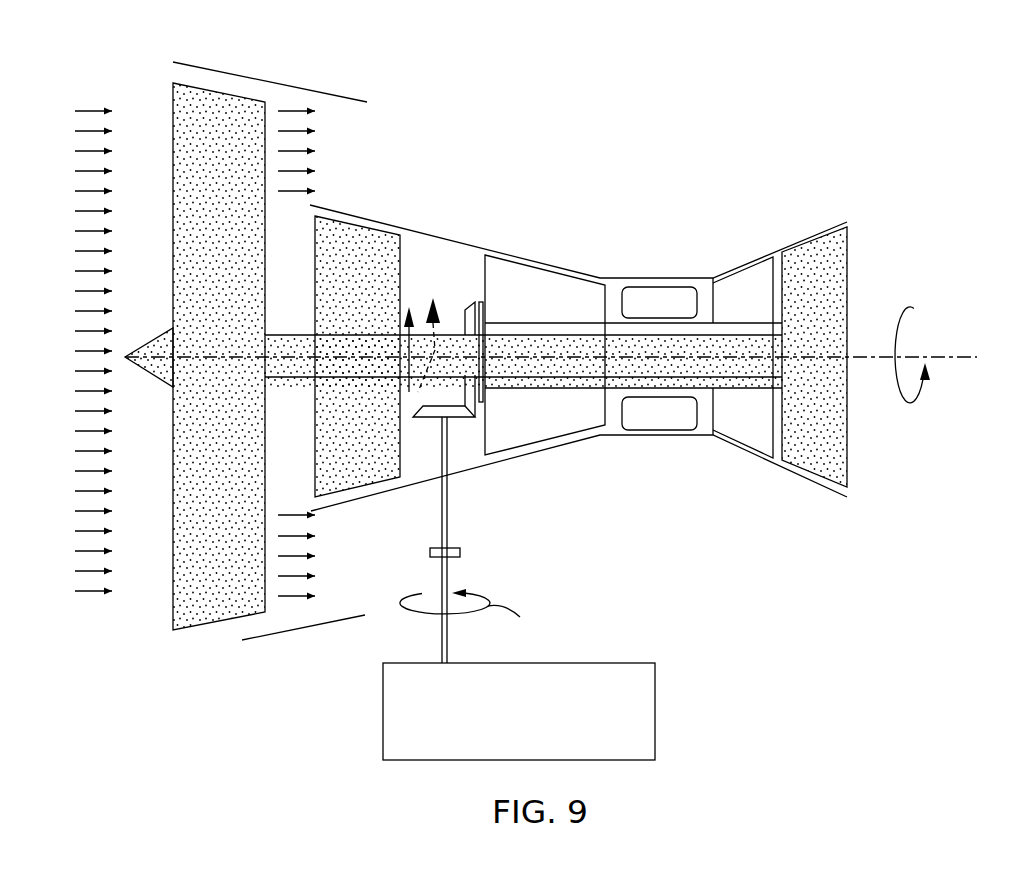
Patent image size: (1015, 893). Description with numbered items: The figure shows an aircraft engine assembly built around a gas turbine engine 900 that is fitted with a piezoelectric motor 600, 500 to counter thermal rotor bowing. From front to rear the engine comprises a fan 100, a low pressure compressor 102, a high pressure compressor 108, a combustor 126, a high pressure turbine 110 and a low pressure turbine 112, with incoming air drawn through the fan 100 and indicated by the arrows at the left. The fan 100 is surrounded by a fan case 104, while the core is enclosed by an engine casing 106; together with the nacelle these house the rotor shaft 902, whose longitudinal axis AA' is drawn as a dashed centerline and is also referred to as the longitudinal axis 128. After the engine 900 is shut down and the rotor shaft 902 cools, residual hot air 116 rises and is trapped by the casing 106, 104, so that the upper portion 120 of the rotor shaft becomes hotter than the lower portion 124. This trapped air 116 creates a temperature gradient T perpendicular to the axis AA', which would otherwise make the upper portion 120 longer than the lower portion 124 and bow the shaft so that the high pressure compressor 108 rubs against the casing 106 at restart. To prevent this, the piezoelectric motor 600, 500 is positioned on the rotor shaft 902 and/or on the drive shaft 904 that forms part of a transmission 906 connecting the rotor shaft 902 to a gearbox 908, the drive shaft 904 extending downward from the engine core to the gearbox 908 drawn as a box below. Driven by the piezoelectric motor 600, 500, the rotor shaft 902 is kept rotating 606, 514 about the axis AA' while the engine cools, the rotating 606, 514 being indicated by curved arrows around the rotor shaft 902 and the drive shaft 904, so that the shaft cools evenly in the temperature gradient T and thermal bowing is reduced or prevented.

The fan 100 is at (196, 293).
The low pressure compressor 102 is at (362, 218).
The fan case 104 is at (261, 80).
The engine casing 106 is at (397, 527).
The high pressure compressor 108 is at (539, 261).
The high pressure turbine 110 is at (754, 274).
The low pressure turbine 112 is at (832, 463).
The residual hot air 116 is at (440, 252).
The upper portion of rotor shaft 120 is at (540, 330).
The lower portion of rotor shaft 124 is at (540, 385).
The combustor 126 is at (670, 441).
The longitudinal axis of rotor shaft 128 is at (84, 110).
The gas turbine engine 900 is at (846, 122).
The rotor shaft 902 is at (772, 329).
The drive shaft 904 is at (455, 512).
The transmission 906 is at (566, 532).
The gearbox 908 is at (655, 710).
The piezoelectric motor 600 is at (504, 460).
The piezoelectric motor 500 is at (483, 366).
The rotating 606 is at (916, 398).
The rotating 514 is at (493, 610).
The temperature gradient T is at (408, 357).
The longitudinal axis AA is at (833, 363).